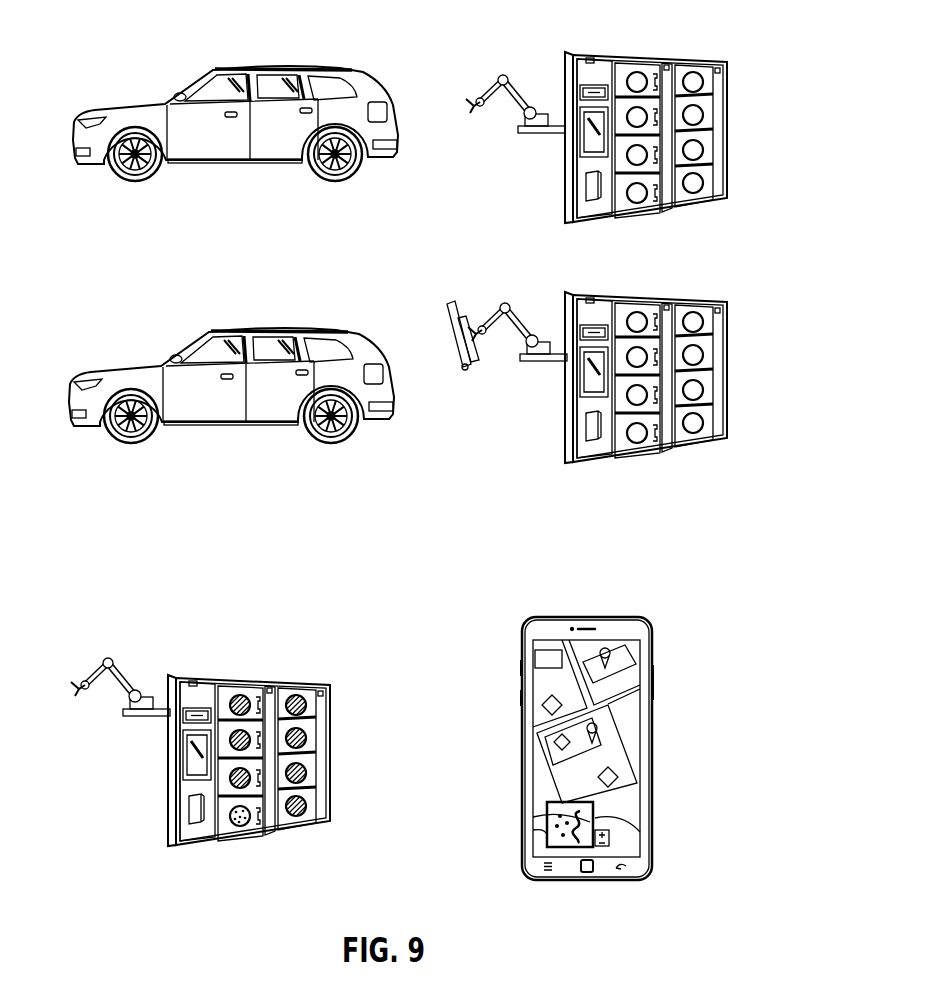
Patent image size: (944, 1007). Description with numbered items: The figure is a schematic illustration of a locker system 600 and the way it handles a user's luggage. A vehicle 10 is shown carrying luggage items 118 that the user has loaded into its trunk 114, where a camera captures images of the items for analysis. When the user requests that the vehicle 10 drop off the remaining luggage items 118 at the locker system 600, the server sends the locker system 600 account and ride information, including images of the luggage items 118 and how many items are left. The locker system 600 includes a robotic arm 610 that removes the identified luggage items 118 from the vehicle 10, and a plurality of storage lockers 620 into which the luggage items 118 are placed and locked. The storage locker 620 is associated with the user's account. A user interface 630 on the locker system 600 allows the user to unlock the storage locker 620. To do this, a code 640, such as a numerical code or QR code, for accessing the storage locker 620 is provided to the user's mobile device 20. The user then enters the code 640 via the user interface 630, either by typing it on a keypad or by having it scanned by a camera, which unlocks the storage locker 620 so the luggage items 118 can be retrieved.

The vehicle 10 is at (121, 92).
The trunk 114 is at (378, 82).
The luggage items 118 is at (455, 306).
The locker system 600 is at (748, 118).
The robotic arm 610 is at (503, 78).
The storage locker 620 is at (239, 830).
The user interface 630 is at (173, 793).
The mobile device 20 is at (660, 688).
The code 640 is at (600, 817).